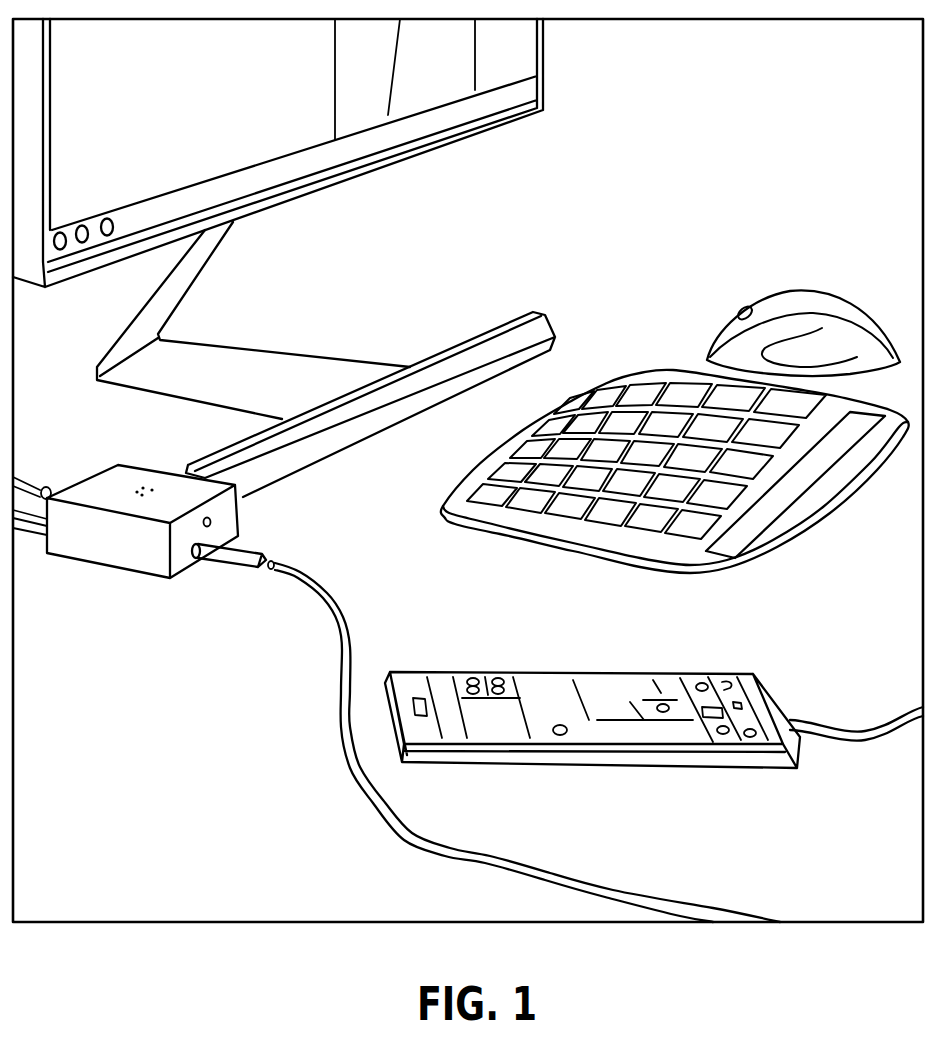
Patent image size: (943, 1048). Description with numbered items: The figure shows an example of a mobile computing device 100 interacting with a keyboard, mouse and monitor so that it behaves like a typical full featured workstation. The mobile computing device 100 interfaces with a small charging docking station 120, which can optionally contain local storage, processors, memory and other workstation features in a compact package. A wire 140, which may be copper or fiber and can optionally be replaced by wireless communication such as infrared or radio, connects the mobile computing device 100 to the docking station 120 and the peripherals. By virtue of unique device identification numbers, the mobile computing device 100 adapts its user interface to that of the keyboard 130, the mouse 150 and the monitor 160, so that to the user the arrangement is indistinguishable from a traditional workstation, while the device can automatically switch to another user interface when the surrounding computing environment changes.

The mobile computing device 100 is at (654, 758).
The charging docking station 120 is at (160, 556).
The keyboard 130 is at (675, 496).
The wire 140 is at (527, 742).
The mouse 150 is at (794, 318).
The monitor 160 is at (284, 258).